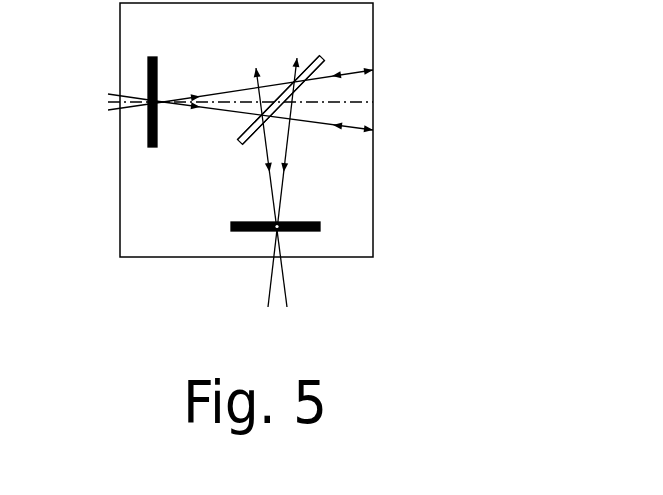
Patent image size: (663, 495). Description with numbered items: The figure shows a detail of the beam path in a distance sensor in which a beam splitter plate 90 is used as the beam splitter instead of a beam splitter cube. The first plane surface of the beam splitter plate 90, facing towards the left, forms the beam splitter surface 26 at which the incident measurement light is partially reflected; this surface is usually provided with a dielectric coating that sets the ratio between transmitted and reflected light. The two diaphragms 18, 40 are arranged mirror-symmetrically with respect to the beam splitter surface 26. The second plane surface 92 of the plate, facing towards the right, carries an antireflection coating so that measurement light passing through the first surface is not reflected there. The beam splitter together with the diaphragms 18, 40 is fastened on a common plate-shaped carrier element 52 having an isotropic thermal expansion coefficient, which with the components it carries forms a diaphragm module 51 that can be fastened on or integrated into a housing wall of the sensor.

The diaphragm 18 is at (158, 138).
The beam splitter surface 26 is at (245, 132).
The diaphragm 40 is at (300, 221).
The diaphragm module 51 is at (433, 128).
The carrier element 52 is at (128, 232).
The beam splitter plate 90 is at (327, 59).
The second plane surface 92 is at (241, 146).